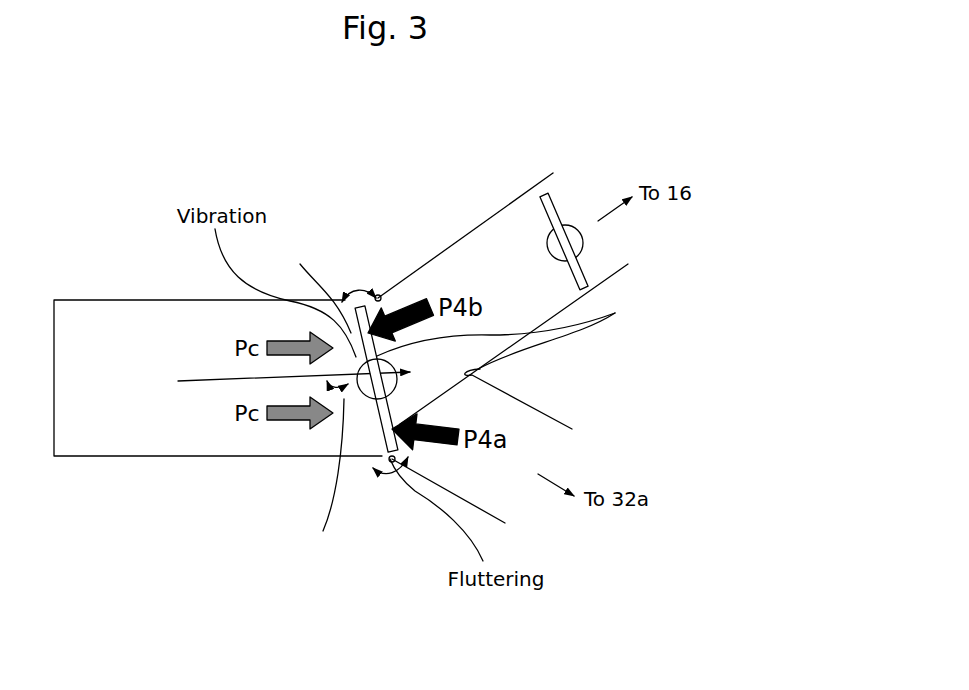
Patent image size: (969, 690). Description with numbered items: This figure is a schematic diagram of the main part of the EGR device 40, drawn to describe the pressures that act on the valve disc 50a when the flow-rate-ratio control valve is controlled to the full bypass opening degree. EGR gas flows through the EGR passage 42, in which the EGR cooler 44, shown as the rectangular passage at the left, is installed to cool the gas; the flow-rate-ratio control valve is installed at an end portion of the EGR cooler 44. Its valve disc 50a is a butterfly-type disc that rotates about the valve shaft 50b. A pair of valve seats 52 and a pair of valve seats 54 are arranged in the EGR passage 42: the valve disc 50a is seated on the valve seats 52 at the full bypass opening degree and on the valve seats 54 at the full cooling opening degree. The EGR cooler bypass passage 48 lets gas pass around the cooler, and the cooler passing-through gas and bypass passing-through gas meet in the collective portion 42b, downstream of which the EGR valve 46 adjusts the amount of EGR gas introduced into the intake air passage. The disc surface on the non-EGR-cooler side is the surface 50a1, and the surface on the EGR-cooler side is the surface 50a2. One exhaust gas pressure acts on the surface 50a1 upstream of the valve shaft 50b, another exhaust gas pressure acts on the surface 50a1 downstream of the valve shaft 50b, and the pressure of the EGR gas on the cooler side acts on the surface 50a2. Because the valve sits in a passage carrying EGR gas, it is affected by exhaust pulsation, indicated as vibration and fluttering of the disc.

The EGR device 40 is at (365, 163).
The EGR passage 42 is at (428, 250).
The collective portion 42b is at (494, 262).
The EGR cooler 44 is at (150, 326).
The EGR valve 46 is at (553, 208).
The EGR cooler bypass passage 48 is at (433, 388).
The valve disc 50a is at (365, 394).
The valve shaft 50b is at (322, 482).
The surface 50a1 is at (528, 333).
The surface 50a2 is at (309, 283).
The valve seats 52 is at (379, 293).
The valve seats 54 is at (480, 374).